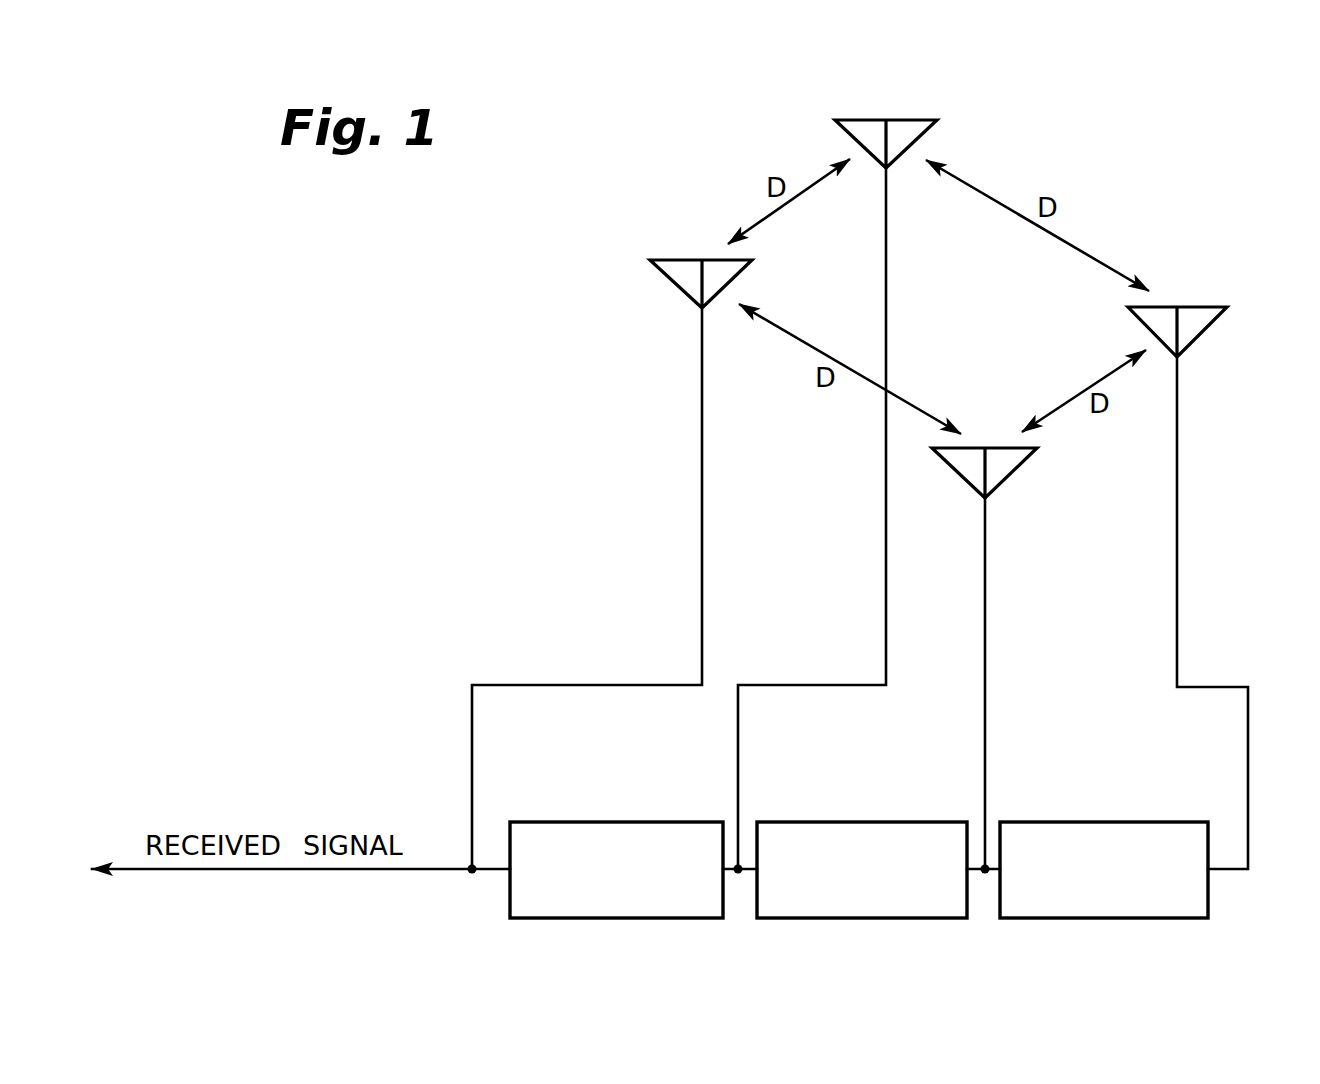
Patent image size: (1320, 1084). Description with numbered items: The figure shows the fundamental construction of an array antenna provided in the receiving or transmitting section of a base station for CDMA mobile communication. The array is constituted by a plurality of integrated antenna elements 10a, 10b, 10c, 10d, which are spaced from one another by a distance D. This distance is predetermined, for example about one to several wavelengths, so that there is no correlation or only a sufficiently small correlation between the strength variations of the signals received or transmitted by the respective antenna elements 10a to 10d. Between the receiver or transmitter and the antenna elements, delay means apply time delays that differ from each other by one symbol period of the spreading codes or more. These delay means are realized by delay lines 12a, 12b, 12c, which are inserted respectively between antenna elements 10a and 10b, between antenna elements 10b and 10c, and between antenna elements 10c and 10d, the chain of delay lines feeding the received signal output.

The antenna element 10a is at (677, 287).
The antenna element 10b is at (928, 136).
The antenna element 10c is at (1010, 474).
The antenna element 10d is at (1204, 331).
The delay line 12a is at (613, 822).
The delay line 12b is at (863, 822).
The delay line 12c is at (1106, 822).